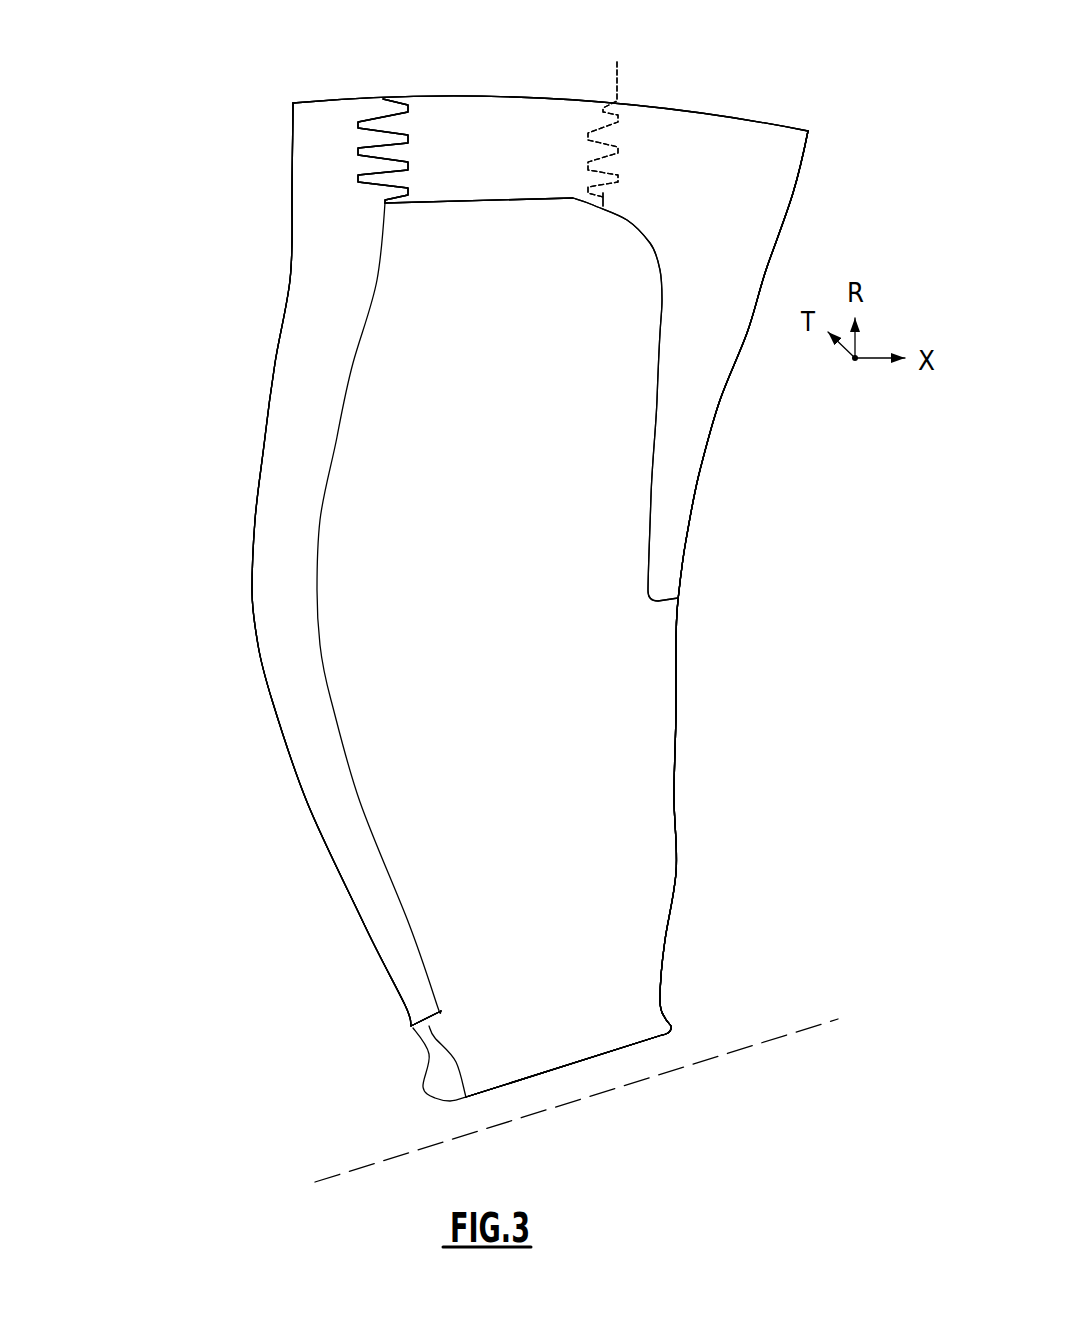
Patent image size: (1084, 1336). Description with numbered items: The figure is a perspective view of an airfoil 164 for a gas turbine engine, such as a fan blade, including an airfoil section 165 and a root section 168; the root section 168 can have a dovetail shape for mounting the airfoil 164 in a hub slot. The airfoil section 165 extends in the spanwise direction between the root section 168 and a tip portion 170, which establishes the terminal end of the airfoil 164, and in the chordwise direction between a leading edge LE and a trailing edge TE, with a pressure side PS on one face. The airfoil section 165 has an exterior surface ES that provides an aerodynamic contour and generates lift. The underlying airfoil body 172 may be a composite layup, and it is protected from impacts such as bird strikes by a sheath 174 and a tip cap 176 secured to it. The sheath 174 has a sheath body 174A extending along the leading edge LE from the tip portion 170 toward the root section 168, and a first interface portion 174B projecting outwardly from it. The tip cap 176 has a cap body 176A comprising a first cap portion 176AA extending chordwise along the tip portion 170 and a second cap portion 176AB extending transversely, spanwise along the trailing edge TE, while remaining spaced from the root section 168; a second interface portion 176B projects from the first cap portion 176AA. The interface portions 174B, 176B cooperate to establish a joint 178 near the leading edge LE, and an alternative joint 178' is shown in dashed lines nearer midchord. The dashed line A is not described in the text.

The airfoil 164 is at (158, 80).
The airfoil section 165 is at (676, 685).
The root section 168 is at (720, 115).
The tip portion 170 is at (293, 118).
The airfoil body 172 is at (641, 731).
The sheath 174 is at (275, 363).
The sheath body 174A is at (275, 438).
The first interface portion 174B is at (377, 112).
The tip cap 176 is at (528, 97).
The cap body 176A is at (670, 127).
The first cap portion 176AA is at (573, 115).
The second cap portion 176AB is at (704, 412).
The second interface portion 176B is at (402, 97).
The joint 178 is at (418, 134).
The joint 178' is at (633, 125).
The leading edge LE is at (253, 575).
The trailing edge TE is at (685, 561).
The pressure side PS is at (664, 789).
The exterior surface ES is at (664, 732).
The axis A is at (803, 1028).